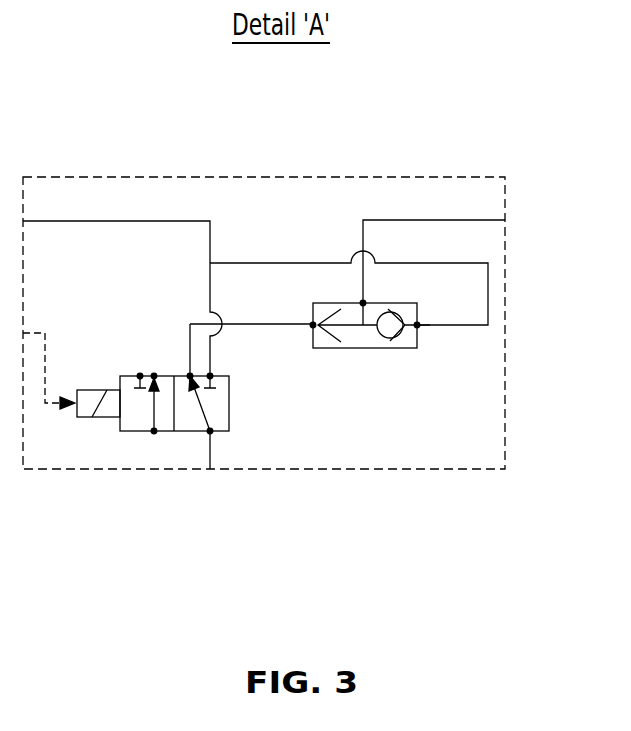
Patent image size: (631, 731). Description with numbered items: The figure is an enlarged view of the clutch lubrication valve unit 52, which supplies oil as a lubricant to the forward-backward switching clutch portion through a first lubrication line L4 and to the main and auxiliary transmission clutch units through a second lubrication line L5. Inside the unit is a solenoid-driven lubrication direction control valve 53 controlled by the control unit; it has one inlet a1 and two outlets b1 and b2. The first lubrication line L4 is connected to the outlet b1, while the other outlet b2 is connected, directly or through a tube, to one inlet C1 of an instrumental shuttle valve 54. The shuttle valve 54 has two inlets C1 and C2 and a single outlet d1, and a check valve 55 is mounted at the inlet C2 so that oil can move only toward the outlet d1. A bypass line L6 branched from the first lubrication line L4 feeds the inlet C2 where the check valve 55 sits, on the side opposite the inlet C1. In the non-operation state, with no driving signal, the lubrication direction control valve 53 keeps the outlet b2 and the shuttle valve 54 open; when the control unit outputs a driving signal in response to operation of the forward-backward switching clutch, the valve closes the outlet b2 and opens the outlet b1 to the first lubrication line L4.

The clutch lubrication valve unit 52 is at (265, 107).
The first lubrication line L4 is at (87, 220).
The second lubrication line L5 is at (470, 220).
The bypass line L6 is at (447, 263).
The outlet of the shuttle valve d1 is at (363, 303).
The inlet of the shuttle valve C1 is at (313, 325).
The inlet of the shuttle valve C2 is at (417, 325).
The lubrication direction control valve 53 is at (133, 431).
The instrumental shuttle valve 54 is at (400, 348).
The check valve 55 is at (417, 325).
The inlet a1 is at (203, 431).
The outlet b1 is at (210, 376).
The outlet b2 is at (190, 376).